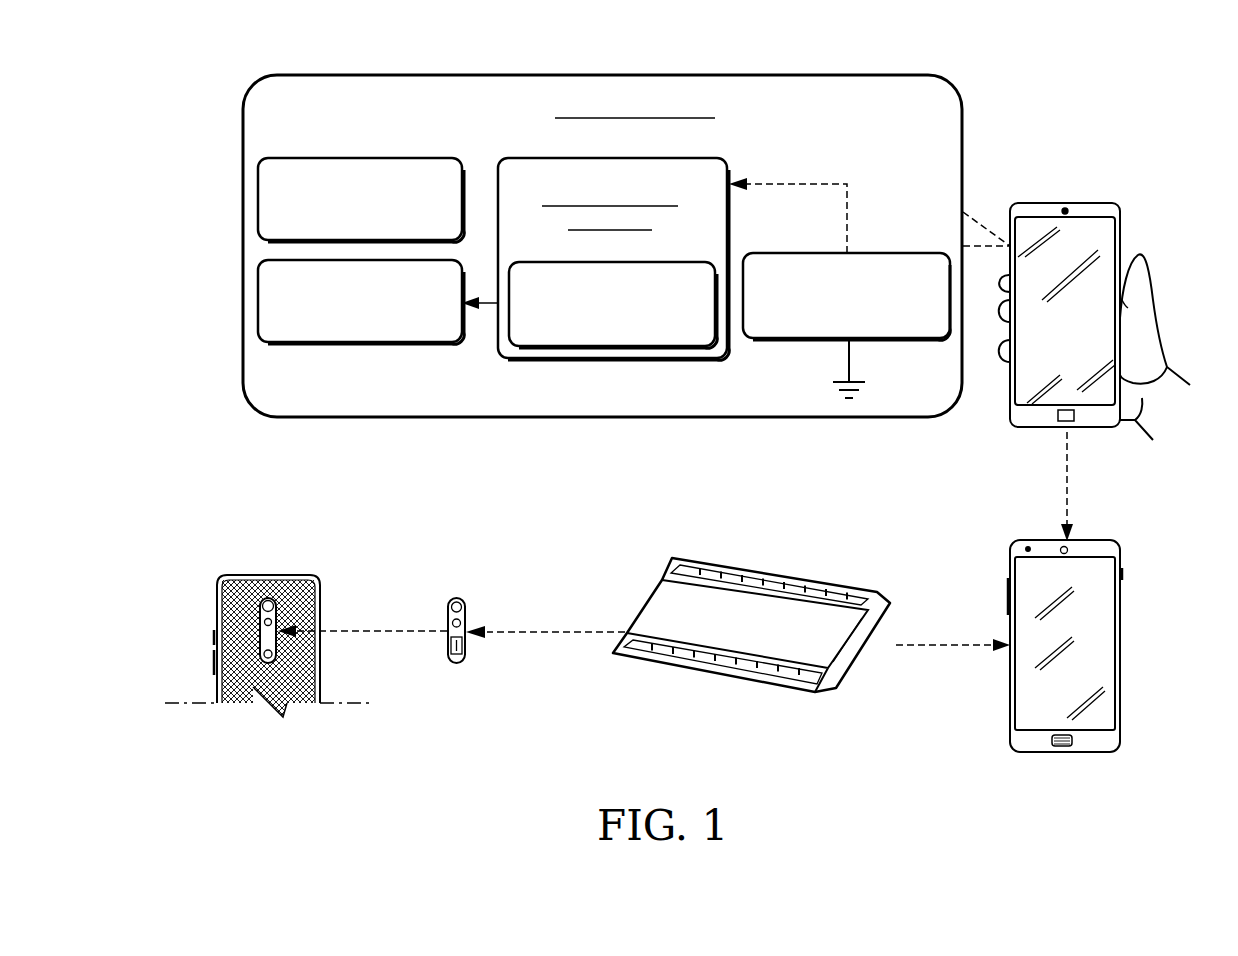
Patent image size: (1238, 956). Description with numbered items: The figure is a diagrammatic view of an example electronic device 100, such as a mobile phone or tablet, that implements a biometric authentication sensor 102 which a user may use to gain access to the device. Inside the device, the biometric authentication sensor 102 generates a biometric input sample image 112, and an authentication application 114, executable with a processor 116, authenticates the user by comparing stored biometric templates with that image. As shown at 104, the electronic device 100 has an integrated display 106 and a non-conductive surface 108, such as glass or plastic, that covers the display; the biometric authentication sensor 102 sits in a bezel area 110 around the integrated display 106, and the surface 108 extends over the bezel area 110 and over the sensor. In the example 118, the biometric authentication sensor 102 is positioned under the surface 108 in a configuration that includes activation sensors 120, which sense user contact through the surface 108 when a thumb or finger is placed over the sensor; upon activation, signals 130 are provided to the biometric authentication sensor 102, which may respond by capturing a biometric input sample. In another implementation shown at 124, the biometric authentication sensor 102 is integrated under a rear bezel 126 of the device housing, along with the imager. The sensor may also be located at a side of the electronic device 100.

The electronic device 100 is at (757, 118).
The biometric authentication sensor 102 is at (612, 358).
The electronic device view 104 is at (1143, 152).
The integrated display 106 is at (1043, 217).
The surface 108 is at (1115, 228).
The bezel area 110 is at (1028, 422).
The biometric input sample image 112 is at (682, 347).
The authentication application 114 is at (258, 300).
The processor 116 is at (258, 200).
The sensor configuration example 118 is at (1163, 598).
The activation sensors 120 is at (777, 339).
The rear bezel implementation example 124 is at (338, 619).
The rear bezel 126 is at (266, 636).
The signals 130 is at (788, 184).